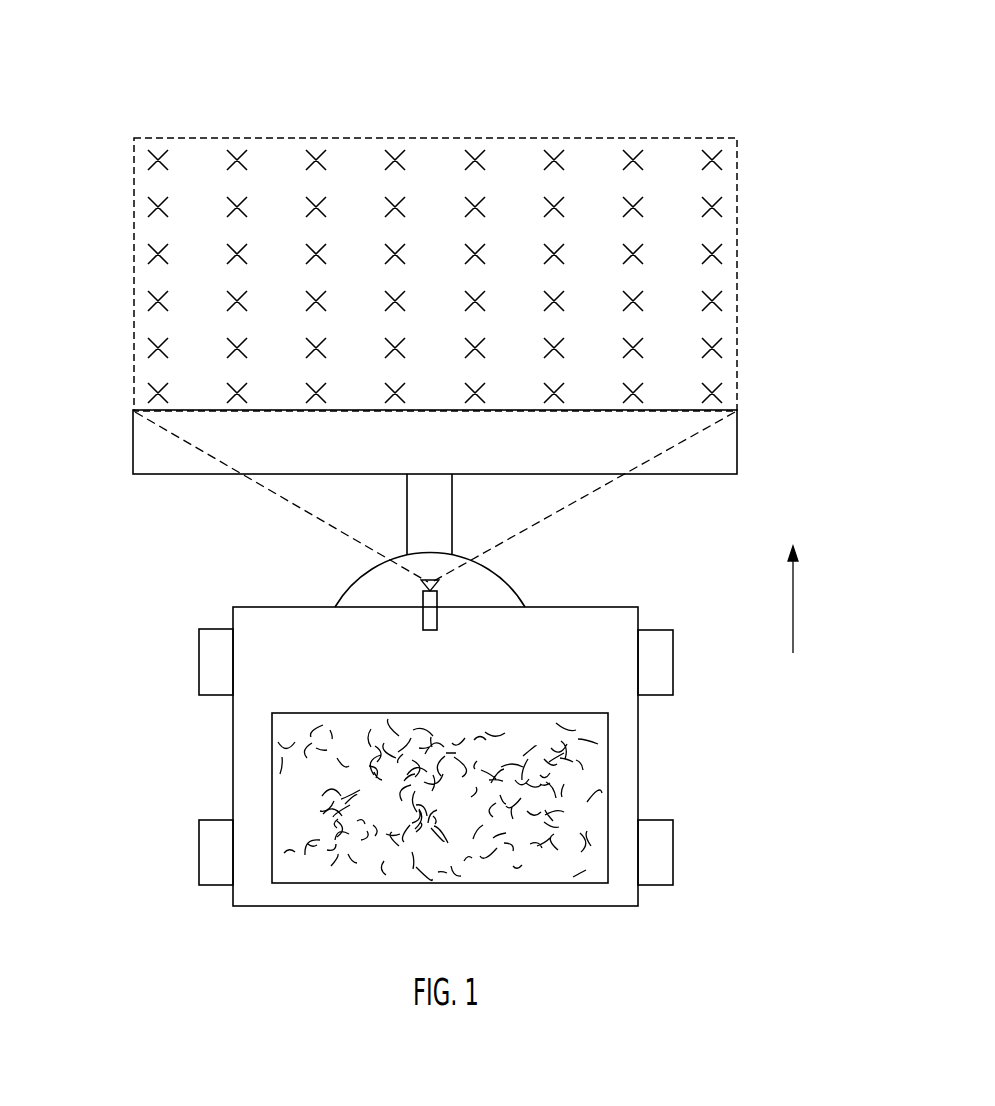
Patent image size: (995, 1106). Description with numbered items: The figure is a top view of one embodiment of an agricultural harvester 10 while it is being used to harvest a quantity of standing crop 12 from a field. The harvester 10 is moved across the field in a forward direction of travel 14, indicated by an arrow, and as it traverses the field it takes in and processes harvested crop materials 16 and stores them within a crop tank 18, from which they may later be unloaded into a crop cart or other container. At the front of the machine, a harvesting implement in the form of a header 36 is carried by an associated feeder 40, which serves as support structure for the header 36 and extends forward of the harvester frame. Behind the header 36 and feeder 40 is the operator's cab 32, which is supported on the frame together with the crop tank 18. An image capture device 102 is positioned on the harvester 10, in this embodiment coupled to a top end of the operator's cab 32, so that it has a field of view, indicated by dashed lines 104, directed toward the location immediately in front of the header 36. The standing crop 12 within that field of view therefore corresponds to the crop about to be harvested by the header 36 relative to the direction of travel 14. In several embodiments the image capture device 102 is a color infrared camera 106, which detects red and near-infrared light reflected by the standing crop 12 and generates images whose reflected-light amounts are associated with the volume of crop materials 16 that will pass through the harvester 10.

The agricultural harvester 10 is at (165, 745).
The standing crop 12 is at (508, 155).
The direction of travel 14 is at (793, 600).
The harvested crop materials 16 is at (575, 803).
The crop tank 18 is at (533, 883).
The operator's cab 32 is at (613, 648).
The header 36 is at (737, 439).
The feeder 40 is at (407, 518).
The image capture device 102 is at (410, 625).
The dashed lines 104 is at (640, 138).
The color infrared camera 106 is at (440, 618).